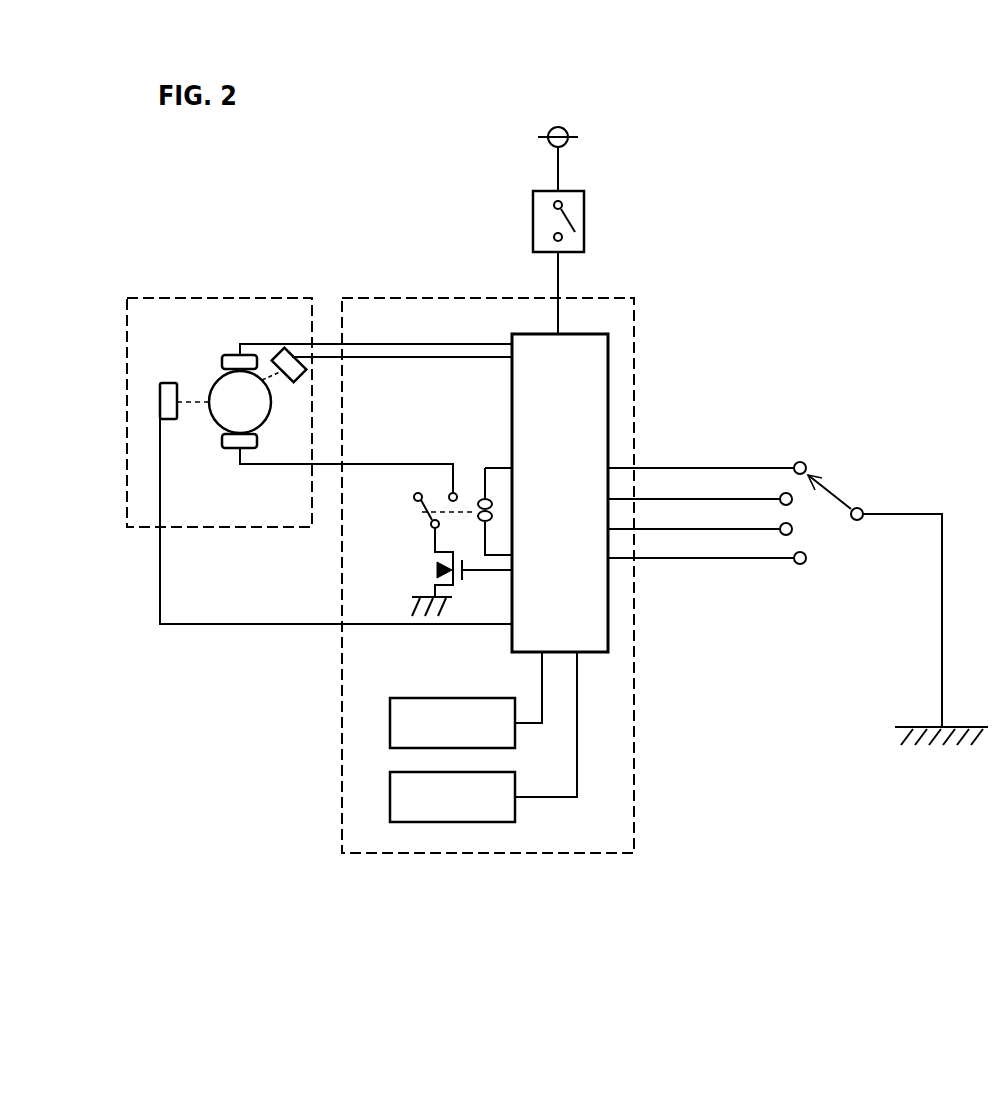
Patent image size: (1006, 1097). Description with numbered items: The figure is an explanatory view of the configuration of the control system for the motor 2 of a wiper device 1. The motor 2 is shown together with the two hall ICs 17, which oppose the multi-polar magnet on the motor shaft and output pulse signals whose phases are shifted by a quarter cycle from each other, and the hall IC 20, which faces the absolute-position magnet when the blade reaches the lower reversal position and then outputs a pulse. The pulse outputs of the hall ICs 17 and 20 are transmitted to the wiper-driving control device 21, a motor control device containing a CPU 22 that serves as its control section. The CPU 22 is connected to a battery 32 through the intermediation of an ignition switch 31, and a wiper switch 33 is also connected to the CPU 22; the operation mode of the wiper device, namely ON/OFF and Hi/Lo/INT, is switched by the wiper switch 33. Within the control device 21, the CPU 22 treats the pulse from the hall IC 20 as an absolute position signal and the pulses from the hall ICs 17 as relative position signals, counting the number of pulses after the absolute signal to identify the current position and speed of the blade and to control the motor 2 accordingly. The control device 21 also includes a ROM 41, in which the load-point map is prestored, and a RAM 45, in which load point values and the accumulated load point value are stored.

The wiper device 1 is at (217, 297).
The motor 2 is at (215, 385).
The hall ICs 17 is at (158, 410).
The hall IC 20 is at (296, 347).
The wiper-driving control device 21 is at (500, 855).
The CPU 22 is at (587, 397).
The ignition switch 31 is at (538, 203).
The battery 32 is at (558, 127).
The wiper switch 33 is at (843, 467).
The ROM 41 is at (390, 720).
The RAM 45 is at (390, 795).